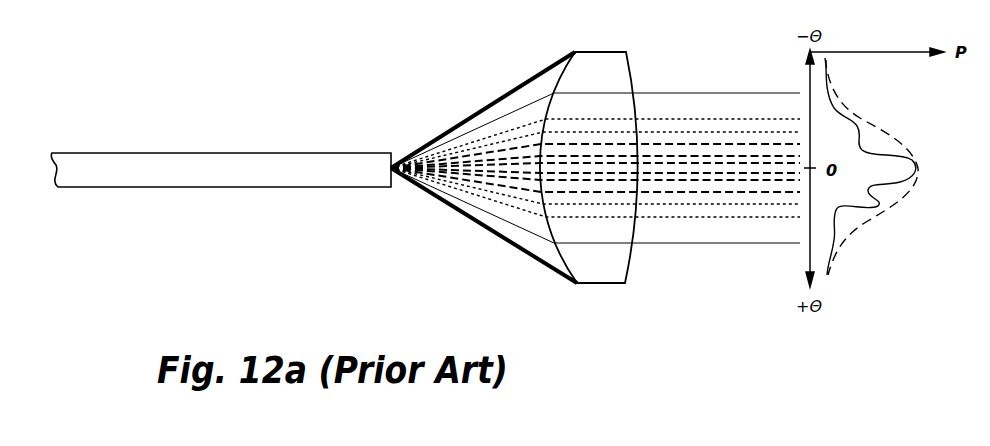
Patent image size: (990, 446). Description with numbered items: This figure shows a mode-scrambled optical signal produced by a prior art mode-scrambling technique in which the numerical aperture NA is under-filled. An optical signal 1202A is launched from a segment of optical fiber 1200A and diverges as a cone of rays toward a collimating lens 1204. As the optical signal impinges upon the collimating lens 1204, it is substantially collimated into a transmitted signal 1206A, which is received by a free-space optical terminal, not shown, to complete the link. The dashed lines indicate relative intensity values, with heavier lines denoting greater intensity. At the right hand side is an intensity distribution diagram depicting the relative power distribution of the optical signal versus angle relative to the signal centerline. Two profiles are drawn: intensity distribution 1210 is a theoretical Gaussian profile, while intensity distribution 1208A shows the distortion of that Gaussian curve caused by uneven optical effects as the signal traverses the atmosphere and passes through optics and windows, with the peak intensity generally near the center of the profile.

The optical fiber 1200A is at (210, 178).
The optical signal 1202A is at (449, 182).
The collimating lens 1204 is at (598, 277).
The transmitted signal 1206A is at (657, 205).
The intensity distribution 1208A is at (860, 212).
The intensity distribution 1210 is at (906, 135).
The numerical aperture NA is at (475, 168).